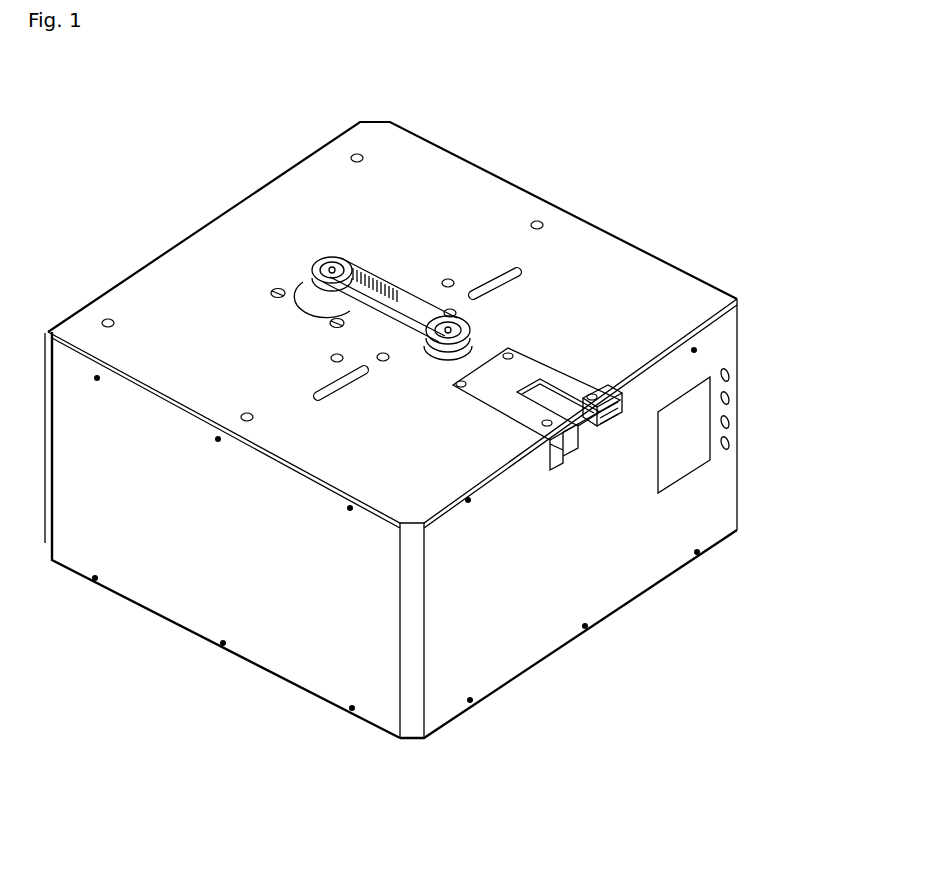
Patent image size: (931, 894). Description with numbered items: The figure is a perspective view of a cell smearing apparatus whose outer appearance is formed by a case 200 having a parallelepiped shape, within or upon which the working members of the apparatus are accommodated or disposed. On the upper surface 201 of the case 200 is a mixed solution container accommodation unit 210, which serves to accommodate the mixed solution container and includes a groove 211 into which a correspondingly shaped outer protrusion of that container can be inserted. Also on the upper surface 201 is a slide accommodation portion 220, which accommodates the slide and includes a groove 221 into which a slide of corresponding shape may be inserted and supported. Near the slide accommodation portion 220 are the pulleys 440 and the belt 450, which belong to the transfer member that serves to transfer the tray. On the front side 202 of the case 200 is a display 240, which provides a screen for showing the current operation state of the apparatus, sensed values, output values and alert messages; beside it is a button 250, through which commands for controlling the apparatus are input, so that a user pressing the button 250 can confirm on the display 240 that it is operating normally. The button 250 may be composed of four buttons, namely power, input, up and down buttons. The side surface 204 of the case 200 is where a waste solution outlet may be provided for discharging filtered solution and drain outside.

The case 200 is at (200, 178).
The upper surface 201 is at (444, 162).
The front side 202 is at (483, 672).
The side surface 204 is at (190, 607).
The mixed solution container accommodation unit 210 is at (605, 393).
The groove 211 is at (597, 398).
The slide accommodation portion 220 is at (617, 400).
The groove 221 is at (578, 462).
The display 240 is at (692, 460).
The button 250 is at (737, 372).
The pulleys 440 is at (326, 262).
The belt 450 is at (427, 312).